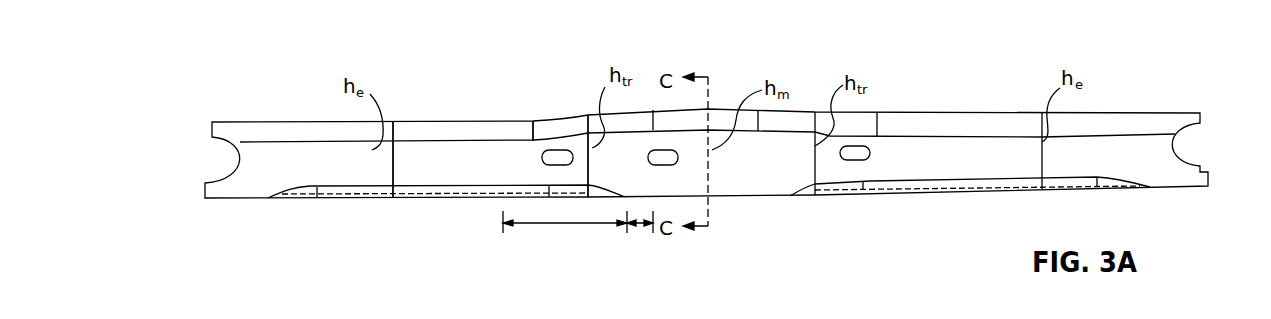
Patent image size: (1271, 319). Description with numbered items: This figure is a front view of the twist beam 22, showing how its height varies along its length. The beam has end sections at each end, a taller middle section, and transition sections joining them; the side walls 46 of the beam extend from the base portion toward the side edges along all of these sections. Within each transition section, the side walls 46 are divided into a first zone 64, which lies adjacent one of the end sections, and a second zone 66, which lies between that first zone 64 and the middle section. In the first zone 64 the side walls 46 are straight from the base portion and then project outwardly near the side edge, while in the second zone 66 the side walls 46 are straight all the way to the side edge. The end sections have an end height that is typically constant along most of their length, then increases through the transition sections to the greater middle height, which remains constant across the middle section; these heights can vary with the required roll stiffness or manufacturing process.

The twist beam 22 is at (1145, 80).
The side walls 46 is at (455, 155).
The first zone 64 is at (553, 226).
The second zone 66 is at (641, 226).